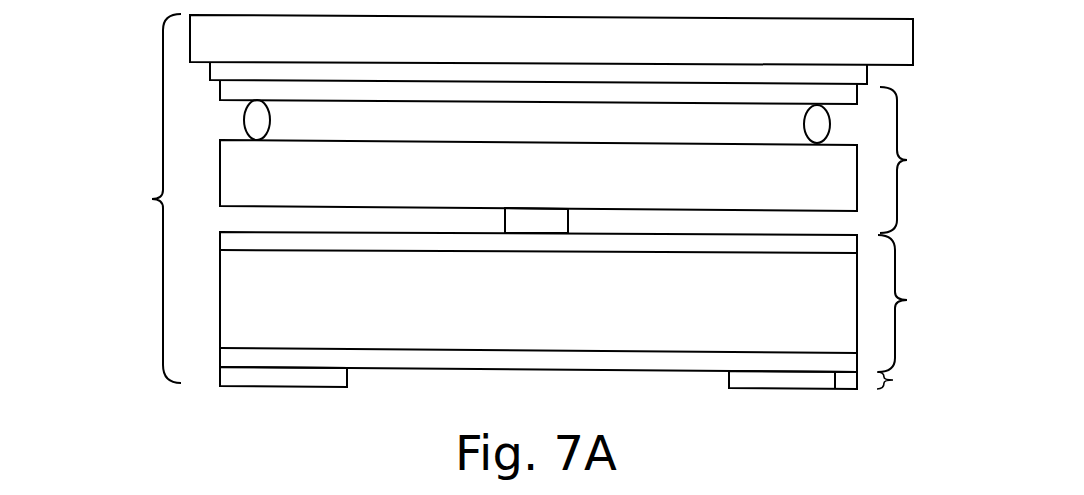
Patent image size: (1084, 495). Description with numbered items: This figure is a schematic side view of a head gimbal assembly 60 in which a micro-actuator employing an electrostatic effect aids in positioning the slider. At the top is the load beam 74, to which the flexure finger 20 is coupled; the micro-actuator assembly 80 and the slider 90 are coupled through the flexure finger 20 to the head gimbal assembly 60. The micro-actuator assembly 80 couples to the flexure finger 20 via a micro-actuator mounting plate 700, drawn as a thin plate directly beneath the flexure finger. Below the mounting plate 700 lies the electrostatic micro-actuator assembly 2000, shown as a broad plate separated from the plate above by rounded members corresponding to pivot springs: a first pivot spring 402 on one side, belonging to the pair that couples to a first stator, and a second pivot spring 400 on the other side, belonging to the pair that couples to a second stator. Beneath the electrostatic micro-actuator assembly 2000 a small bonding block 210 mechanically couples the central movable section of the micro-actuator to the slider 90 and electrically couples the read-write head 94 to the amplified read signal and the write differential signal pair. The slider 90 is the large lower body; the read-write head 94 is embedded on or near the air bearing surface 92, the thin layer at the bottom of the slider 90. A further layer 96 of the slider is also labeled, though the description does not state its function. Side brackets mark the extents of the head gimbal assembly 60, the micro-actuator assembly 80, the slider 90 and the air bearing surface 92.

The head gimbal assembly 60 is at (150, 198).
The load beam 74 is at (551, 40).
The flexure finger 20 is at (581, 101).
The micro-actuator mounting plate 700 is at (533, 103).
The first pivot spring 402 is at (271, 116).
The second pivot spring 400 is at (802, 124).
The micro-actuator assembly 80 is at (916, 160).
The electrostatic micro-actuator assembly 2000 is at (538, 175).
The bonding block 210 is at (505, 222).
The slider 90 is at (586, 302).
The base upper layer 96 is at (525, 253).
The air bearing surface 92 is at (586, 394).
The read-write head 94 is at (540, 370).